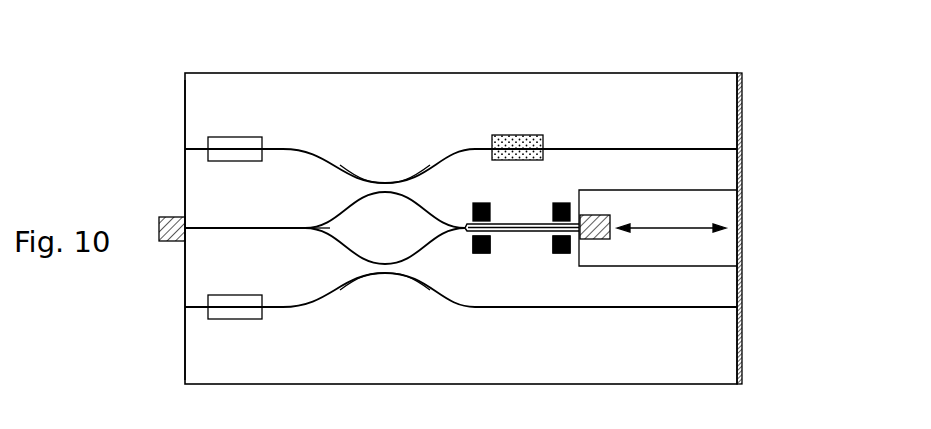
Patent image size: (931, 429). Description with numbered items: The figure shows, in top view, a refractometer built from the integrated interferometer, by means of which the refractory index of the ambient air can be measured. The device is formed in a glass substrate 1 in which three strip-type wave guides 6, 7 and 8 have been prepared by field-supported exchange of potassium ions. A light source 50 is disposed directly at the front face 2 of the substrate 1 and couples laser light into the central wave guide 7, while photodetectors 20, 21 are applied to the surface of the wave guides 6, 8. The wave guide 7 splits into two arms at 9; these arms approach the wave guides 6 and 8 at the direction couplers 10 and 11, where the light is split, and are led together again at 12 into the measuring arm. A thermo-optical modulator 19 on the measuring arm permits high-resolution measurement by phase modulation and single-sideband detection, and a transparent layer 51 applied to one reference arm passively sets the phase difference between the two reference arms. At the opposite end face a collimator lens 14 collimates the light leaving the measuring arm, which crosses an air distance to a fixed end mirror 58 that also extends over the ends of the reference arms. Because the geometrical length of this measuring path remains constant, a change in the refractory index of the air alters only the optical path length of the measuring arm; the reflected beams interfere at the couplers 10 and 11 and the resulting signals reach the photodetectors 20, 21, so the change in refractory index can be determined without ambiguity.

The glass substrate 1 is at (590, 73).
The front face of the substrate 2 is at (185, 100).
The wave guide 6 is at (284, 147).
The wave guide 7 is at (240, 226).
The wave guide 8 is at (284, 309).
The splitting point 9 is at (299, 233).
The direction coupler 10 is at (388, 181).
The direction coupler 11 is at (385, 277).
The junction of the arms 12 is at (465, 222).
The collimator lens 14 is at (598, 244).
The thermo-optical modulator 19 is at (490, 243).
The photodetector 20 is at (240, 137).
The photodetector 21 is at (243, 320).
The light source 50 is at (170, 243).
The transparent layer 51 is at (508, 135).
The fixed end mirror 58 is at (742, 172).